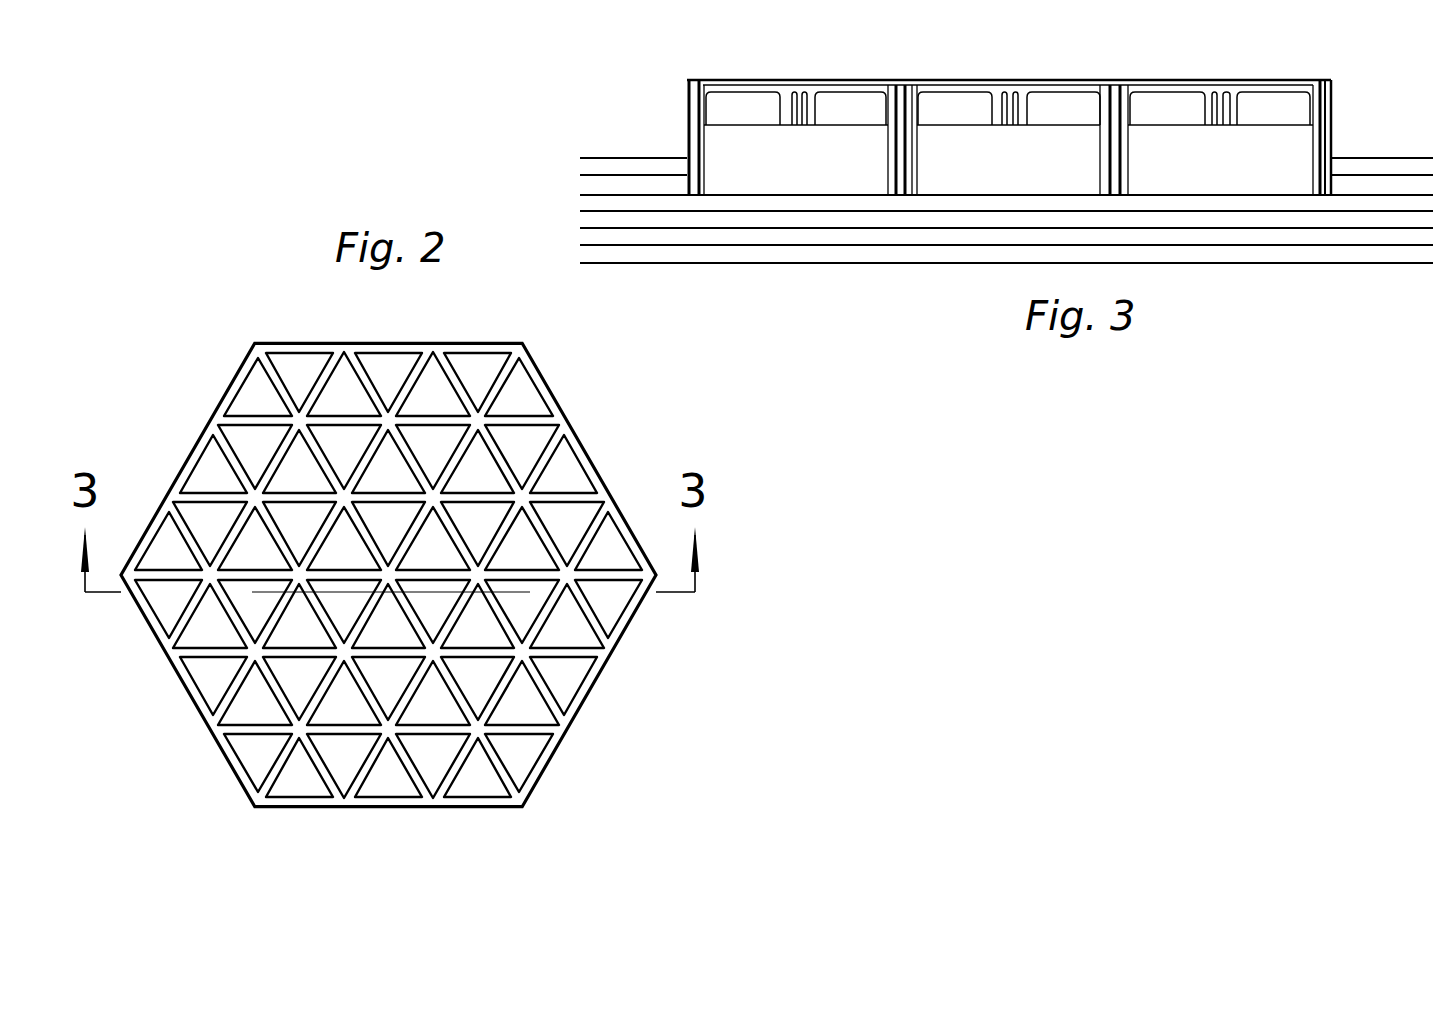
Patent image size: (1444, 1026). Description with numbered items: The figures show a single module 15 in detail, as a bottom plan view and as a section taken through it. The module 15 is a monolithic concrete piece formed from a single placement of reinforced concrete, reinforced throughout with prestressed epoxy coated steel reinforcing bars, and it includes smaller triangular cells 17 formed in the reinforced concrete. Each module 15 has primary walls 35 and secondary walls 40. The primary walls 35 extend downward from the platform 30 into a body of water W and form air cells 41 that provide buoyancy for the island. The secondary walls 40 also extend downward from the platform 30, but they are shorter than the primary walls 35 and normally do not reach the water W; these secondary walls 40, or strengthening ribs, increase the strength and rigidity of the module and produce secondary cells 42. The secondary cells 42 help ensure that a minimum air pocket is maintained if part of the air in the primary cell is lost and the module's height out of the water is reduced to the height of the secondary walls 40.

In FIG. 2, the module 15 is at (195, 384).
In FIG. 3, the module 15 is at (1334, 72).
In FIG. 2, the triangular cells 17 is at (371, 485).
In FIG. 3, the platform 30 is at (1228, 79).
In FIG. 2, the primary walls 35 is at (602, 668).
In FIG. 3, the primary walls 35 is at (687, 127).
In FIG. 2, the secondary walls 40 is at (452, 765).
In FIG. 3, the secondary walls 40 is at (817, 104).
In FIG. 3, the air cells 41 is at (773, 177).
In FIG. 3, the secondary cells 42 is at (712, 122).
In FIG. 3, the water W is at (1422, 253).